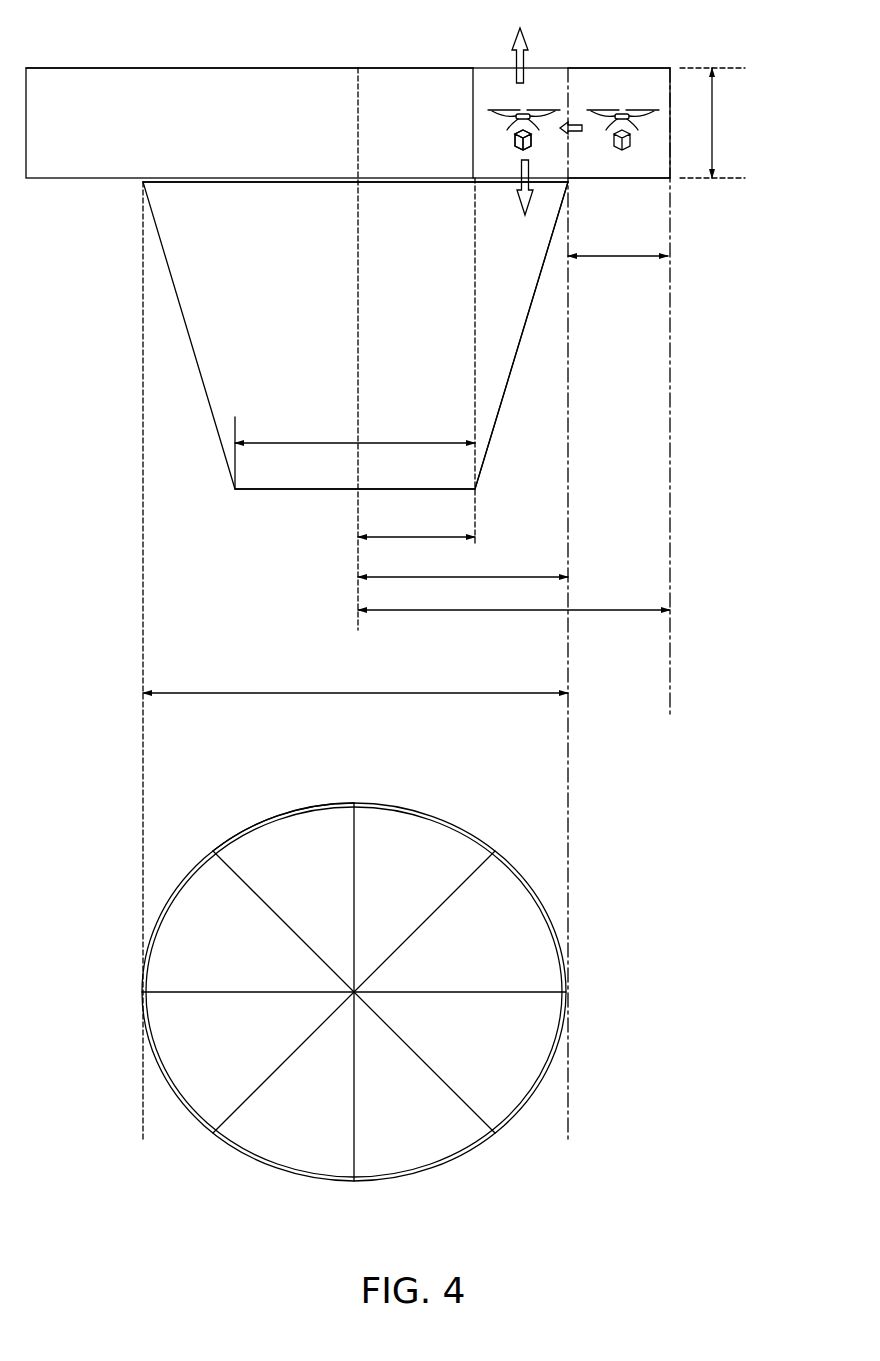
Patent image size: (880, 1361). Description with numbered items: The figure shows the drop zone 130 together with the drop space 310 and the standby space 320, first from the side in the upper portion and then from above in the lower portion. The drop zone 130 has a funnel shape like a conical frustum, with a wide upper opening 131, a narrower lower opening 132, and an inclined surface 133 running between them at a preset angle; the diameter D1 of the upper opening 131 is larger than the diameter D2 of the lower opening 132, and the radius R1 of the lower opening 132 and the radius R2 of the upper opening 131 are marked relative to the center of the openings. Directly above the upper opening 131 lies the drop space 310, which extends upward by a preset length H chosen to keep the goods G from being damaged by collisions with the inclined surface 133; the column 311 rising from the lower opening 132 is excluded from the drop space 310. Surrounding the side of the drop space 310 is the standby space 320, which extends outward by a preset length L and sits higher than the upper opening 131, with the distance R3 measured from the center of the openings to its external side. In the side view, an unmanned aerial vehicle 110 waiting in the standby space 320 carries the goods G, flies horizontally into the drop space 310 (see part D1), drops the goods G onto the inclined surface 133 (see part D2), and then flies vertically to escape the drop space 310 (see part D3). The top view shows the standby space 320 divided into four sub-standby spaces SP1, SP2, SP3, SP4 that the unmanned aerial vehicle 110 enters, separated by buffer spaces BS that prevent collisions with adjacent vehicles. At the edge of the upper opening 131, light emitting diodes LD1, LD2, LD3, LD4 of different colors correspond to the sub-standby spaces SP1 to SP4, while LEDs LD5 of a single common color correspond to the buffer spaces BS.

The unmanned aerial vehicle 110 is at (621, 98).
The drop zone 130 is at (225, 225).
The upper opening 131 is at (318, 183).
The lower opening 132 is at (272, 490).
The inclined surface 133 is at (508, 358).
The drop space 310 is at (545, 92).
The space formed by extending upward from the lower opening 311 is at (408, 105).
The standby space 320 is at (647, 92).
The goods G is at (513, 143).
The diameter of the upper opening / horizontal entry D1 is at (365, 407).
The diameter of the lower opening / goods dropping D2 is at (384, 324).
The vertical escape flight D3 is at (502, 46).
The preset length H is at (712, 123).
The preset length L is at (618, 243).
The radius of the lower opening R1 is at (416, 523).
The radius of the upper opening R2 is at (463, 564).
The distance from the center of the openings to the external side of the standby spa R3 is at (514, 597).
The light emitting diode LD1 is at (445, 823).
The light emitting diode LD2 is at (562, 1064).
The light emitting diode LD3 is at (265, 1163).
The light emitting diode LD4 is at (148, 923).
The light emitting diode LD5 is at (263, 822).
The sub-standby space SP1 is at (401, 880).
The sub-standby space SP2 is at (472, 1040).
The sub-standby space SP3 is at (309, 1108).
The sub-standby space SP4 is at (232, 953).
The buffer space BS is at (351, 994).